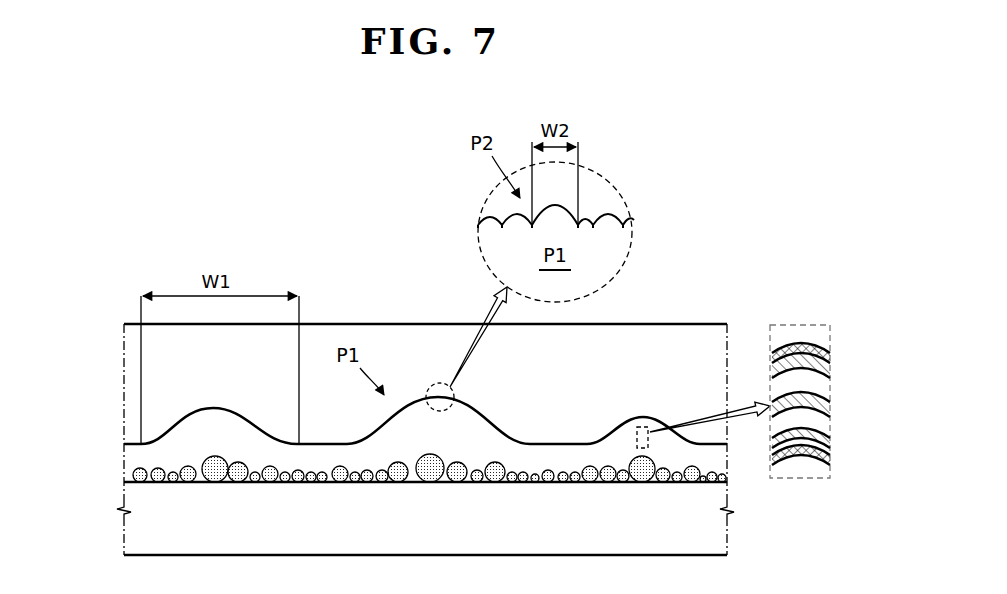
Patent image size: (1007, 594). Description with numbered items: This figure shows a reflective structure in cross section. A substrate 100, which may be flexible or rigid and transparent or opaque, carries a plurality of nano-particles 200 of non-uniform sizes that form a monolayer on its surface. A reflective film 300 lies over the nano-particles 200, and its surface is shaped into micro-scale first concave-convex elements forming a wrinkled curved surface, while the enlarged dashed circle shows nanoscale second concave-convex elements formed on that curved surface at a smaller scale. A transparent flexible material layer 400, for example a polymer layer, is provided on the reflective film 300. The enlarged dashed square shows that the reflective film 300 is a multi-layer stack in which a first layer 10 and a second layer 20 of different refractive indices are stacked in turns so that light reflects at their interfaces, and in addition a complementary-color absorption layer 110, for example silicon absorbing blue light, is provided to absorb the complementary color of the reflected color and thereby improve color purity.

The substrate 100 is at (124, 539).
The nano-particles 200 is at (122, 477).
The reflective film 300 is at (124, 450).
The transparent flexible material layer 400 is at (128, 370).
The first layer 10 is at (830, 441).
The second layer 20 is at (830, 418).
The complementary-color absorption layer 110 is at (830, 351).